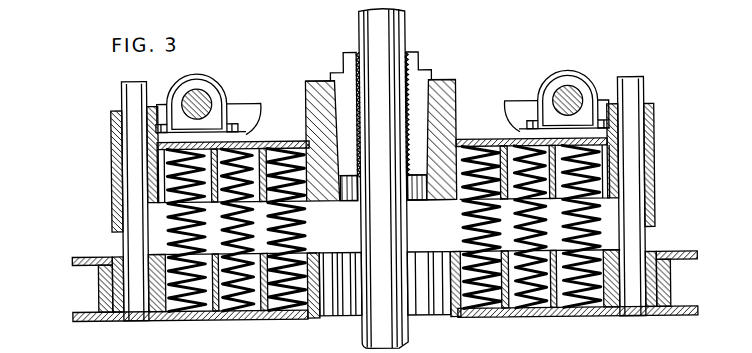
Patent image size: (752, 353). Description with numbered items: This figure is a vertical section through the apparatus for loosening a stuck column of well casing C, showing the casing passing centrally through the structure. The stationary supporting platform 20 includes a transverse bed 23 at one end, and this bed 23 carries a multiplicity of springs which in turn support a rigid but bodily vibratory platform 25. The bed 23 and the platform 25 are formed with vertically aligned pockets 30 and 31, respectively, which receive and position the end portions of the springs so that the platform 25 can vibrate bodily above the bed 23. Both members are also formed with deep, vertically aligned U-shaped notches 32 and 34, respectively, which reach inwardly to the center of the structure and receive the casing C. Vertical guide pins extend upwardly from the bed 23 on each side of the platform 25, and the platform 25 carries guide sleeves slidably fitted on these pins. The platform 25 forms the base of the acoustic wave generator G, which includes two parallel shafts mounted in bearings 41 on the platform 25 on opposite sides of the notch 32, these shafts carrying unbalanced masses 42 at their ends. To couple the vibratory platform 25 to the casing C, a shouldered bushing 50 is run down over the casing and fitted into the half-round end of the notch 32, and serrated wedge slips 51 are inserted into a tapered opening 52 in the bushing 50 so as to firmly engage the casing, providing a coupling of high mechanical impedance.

The supporting platform 20 is at (382, 177).
The bed 23 is at (178, 327).
The vibratory platform 25 is at (278, 137).
The pocket 30 is at (223, 311).
The pocket 31 is at (308, 204).
The notch 32 is at (443, 205).
The notch 34 is at (321, 315).
The bearing 41 is at (546, 86).
The unbalanced mass 42 is at (236, 107).
The shouldered bushing 50 is at (470, 84).
The serrated wedge slip 51 is at (423, 78).
The tapered opening 52 is at (347, 204).
The column of well casing C is at (369, 23).
The acoustic wave generator G is at (584, 76).